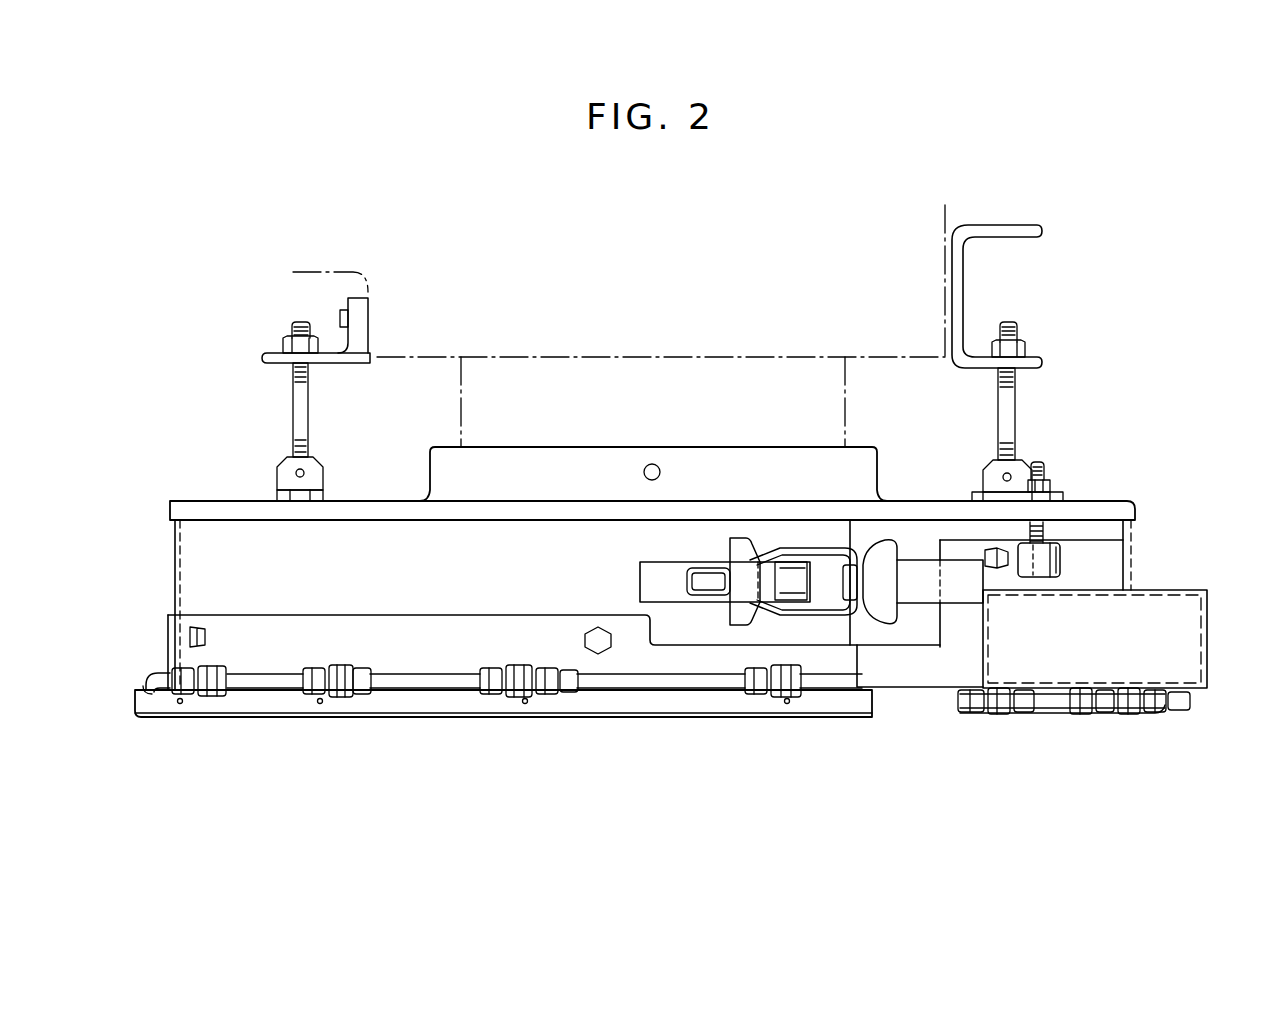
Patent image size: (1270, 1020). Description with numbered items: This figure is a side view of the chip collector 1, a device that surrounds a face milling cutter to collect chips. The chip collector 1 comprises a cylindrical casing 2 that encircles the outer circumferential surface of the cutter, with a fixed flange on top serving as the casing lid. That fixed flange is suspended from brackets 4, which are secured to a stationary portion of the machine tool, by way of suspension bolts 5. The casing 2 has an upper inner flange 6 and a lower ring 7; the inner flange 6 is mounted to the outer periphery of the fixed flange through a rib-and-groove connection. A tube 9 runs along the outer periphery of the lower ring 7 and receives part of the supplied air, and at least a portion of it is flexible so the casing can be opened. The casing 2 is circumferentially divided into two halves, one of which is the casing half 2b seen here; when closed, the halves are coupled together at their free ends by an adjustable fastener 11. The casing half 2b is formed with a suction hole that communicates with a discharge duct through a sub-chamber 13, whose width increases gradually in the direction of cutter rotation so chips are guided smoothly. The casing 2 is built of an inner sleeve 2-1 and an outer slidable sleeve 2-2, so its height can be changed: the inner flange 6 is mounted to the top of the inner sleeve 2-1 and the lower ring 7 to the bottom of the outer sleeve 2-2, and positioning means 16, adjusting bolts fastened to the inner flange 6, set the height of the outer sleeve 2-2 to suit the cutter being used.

The chip collector 1 is at (1138, 380).
The casing 2 is at (312, 722).
The inner sleeve 2-1 is at (207, 585).
The outer slidable sleeve 2-2 is at (193, 657).
The casing half 2b is at (172, 548).
The brackets 4 is at (332, 352).
The suspension bolts 5 is at (297, 387).
The upper inner flange 6 is at (1118, 509).
The lower ring 7 is at (400, 700).
The tube 9 is at (470, 678).
The adjustable fastener 11 is at (750, 592).
The sub-chamber 13 is at (1188, 636).
The positioning means 16 is at (1050, 470).